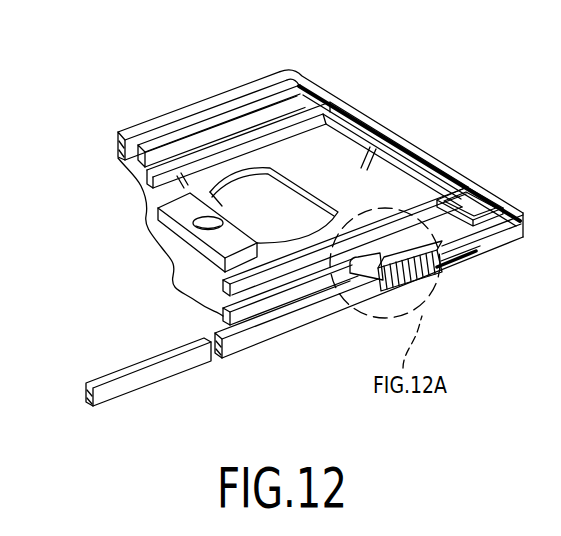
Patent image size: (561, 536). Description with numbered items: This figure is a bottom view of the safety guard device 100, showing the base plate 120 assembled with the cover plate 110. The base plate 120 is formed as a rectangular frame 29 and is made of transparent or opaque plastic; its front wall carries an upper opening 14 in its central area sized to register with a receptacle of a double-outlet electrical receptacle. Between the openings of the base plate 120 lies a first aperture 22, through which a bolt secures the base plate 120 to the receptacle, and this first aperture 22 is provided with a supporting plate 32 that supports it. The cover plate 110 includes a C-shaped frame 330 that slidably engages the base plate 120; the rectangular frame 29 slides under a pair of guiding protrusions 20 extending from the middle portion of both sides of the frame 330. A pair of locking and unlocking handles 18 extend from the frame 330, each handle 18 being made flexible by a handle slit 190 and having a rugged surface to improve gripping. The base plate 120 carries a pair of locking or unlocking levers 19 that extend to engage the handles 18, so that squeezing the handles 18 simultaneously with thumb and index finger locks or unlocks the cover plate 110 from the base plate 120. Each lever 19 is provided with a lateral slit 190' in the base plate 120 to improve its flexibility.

The safety guard device 100 is at (310, 66).
The base plate 120 is at (122, 120).
The guiding protrusions 20 is at (172, 130).
The rectangular frame 29 is at (239, 115).
The lateral slit 190' is at (345, 203).
The locking or unlocking lever 19 is at (428, 214).
The upper opening 14 is at (308, 220).
The first aperture 22 is at (196, 228).
The supporting plate 32 is at (177, 200).
The cover plate 110 is at (252, 360).
The C-shaped frame 330 is at (177, 367).
The locking and unlocking handle 18 is at (427, 276).
The handle slit 190 is at (478, 277).